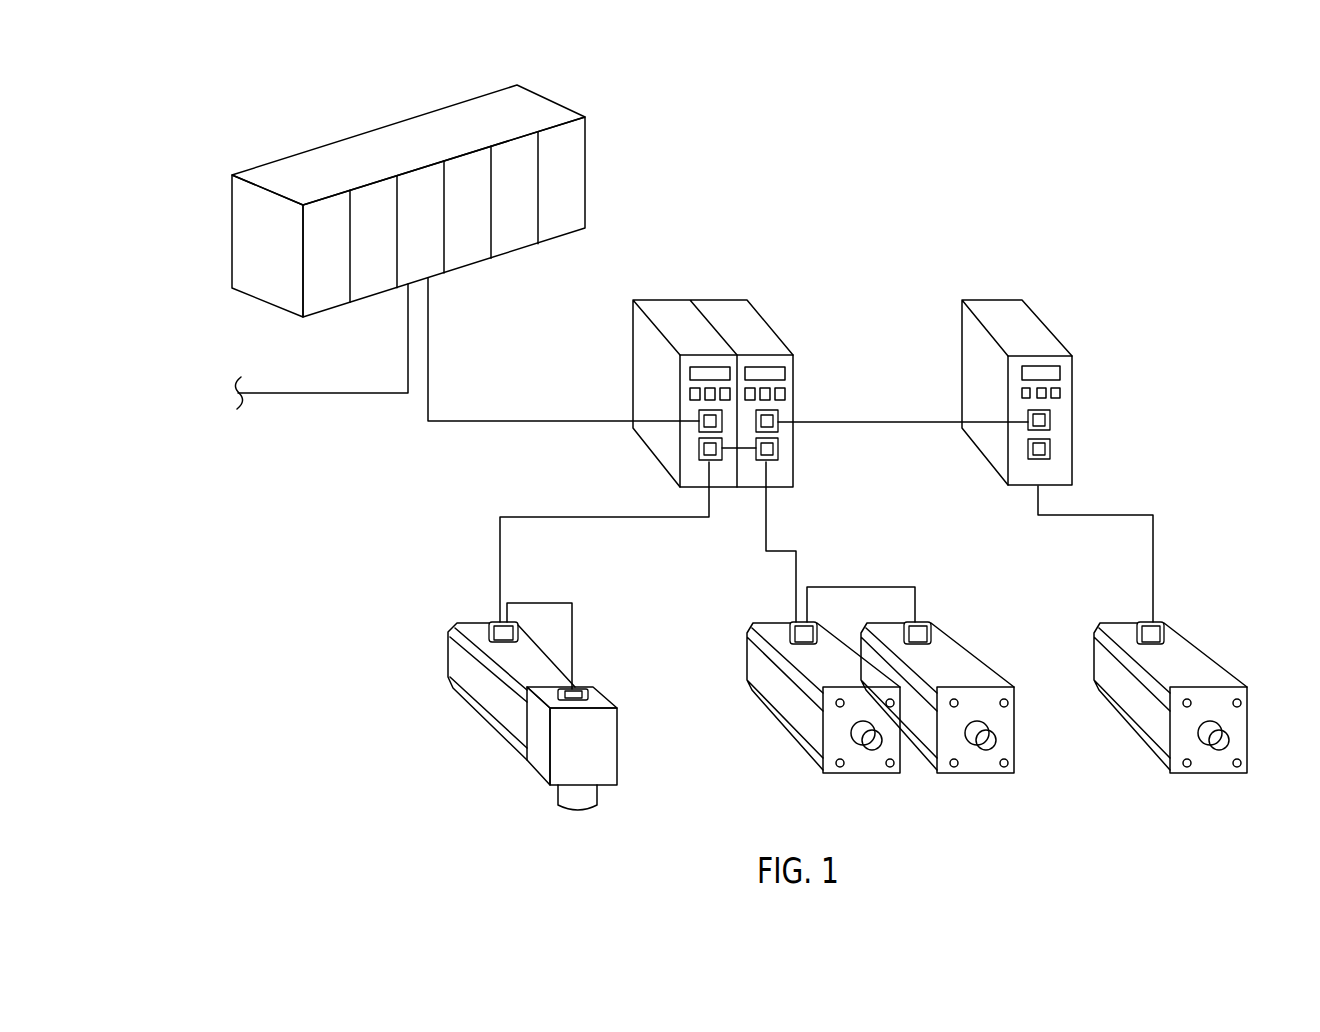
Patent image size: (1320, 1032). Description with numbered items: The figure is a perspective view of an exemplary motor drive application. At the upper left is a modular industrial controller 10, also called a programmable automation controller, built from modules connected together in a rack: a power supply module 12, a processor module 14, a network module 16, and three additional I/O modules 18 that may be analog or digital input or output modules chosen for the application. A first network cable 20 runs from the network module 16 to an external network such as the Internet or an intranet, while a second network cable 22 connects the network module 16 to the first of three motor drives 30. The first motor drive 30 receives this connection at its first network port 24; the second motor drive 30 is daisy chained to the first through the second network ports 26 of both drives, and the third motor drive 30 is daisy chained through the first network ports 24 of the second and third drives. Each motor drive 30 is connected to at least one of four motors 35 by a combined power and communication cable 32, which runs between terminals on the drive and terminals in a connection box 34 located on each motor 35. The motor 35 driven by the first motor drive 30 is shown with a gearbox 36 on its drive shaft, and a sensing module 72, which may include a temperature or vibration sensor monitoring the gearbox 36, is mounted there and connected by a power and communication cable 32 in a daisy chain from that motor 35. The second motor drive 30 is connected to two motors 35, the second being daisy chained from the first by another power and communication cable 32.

The industrial controller 10 is at (266, 237).
The power supply module 12 is at (327, 213).
The processor module 14 is at (370, 198).
The network module 16 is at (418, 182).
The I/O module 18 is at (560, 132).
The first network cable 20 is at (327, 398).
The second network cable 22 is at (509, 427).
The first network port 24 is at (696, 411).
The second network port 26 is at (696, 449).
The motor drive 30 is at (670, 308).
The combined power and communication cable 32 is at (557, 513).
The connection box 34 is at (488, 626).
The motor 35 is at (484, 736).
The gearbox 36 is at (545, 752).
The sensing module 72 is at (588, 699).